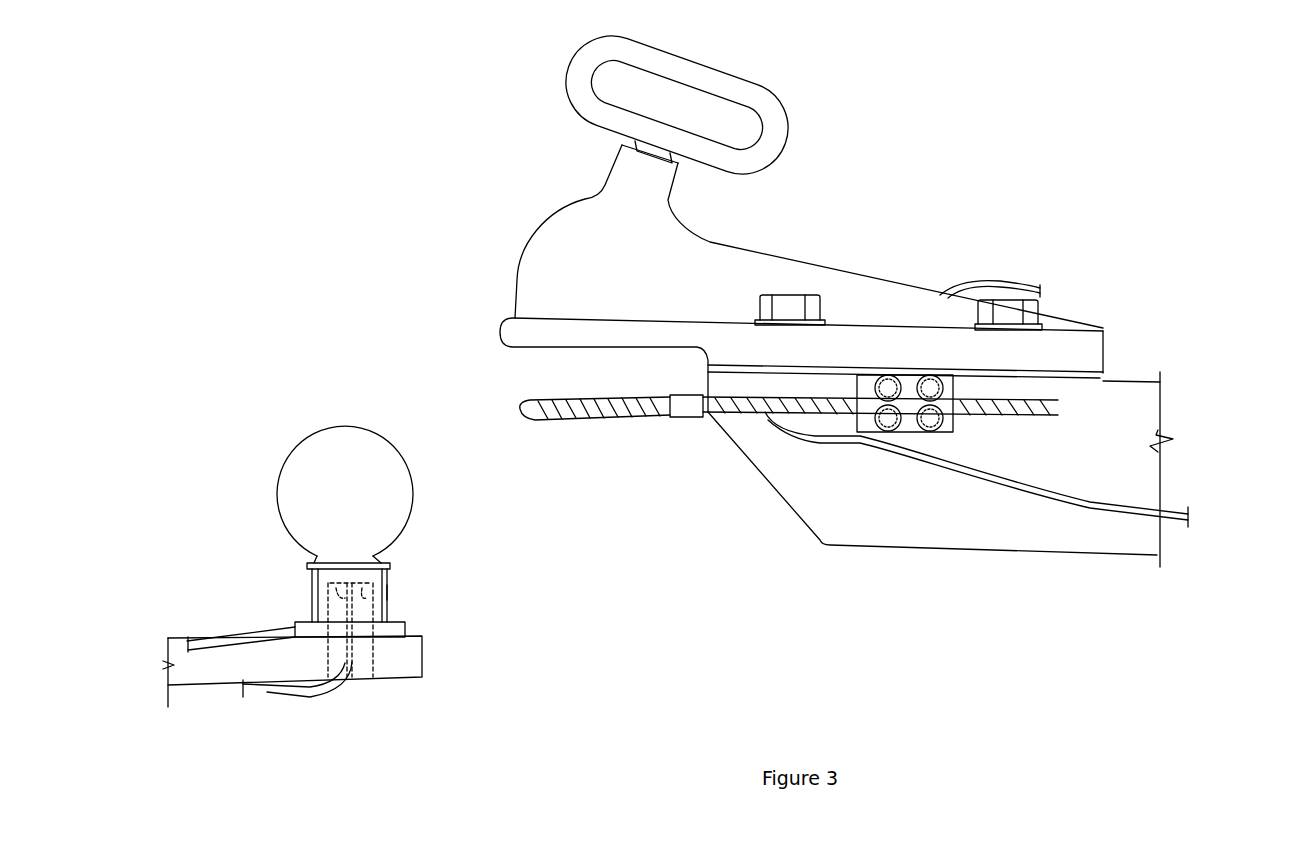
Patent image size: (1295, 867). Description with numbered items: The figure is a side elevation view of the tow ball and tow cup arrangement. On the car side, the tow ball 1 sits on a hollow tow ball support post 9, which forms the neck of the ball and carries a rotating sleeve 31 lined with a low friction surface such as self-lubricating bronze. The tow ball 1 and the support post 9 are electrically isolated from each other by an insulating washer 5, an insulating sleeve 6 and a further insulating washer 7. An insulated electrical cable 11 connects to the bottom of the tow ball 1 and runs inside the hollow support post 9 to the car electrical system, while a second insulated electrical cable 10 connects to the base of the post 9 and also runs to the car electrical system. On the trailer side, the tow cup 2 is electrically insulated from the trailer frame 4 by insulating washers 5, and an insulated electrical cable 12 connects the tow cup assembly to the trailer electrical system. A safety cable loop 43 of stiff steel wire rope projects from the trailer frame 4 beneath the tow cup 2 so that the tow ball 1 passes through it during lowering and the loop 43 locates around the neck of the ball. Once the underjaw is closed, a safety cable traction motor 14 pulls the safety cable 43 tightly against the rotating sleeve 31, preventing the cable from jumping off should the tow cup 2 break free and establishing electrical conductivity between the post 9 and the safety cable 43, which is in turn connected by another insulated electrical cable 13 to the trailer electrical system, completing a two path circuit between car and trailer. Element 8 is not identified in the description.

The tow ball 1 is at (300, 490).
The tow cup 2 is at (550, 218).
The trailer frame 4 is at (922, 552).
The insulating washer 5 is at (826, 321).
The insulating sleeve 6 is at (313, 567).
The insulating washer 7 is at (313, 577).
The internal passage 8 is at (327, 593).
The tow ball support post 9 is at (323, 615).
The second insulated electrical cable 10 is at (273, 628).
The insulated electrical cable 11 is at (273, 697).
The insulated electrical cable 12 is at (1007, 278).
The insulated electrical cable 13 is at (1170, 512).
The safety cable traction motor 14 is at (873, 420).
The rotating sleeve 31 is at (390, 588).
The safety cable loop 43 is at (590, 430).